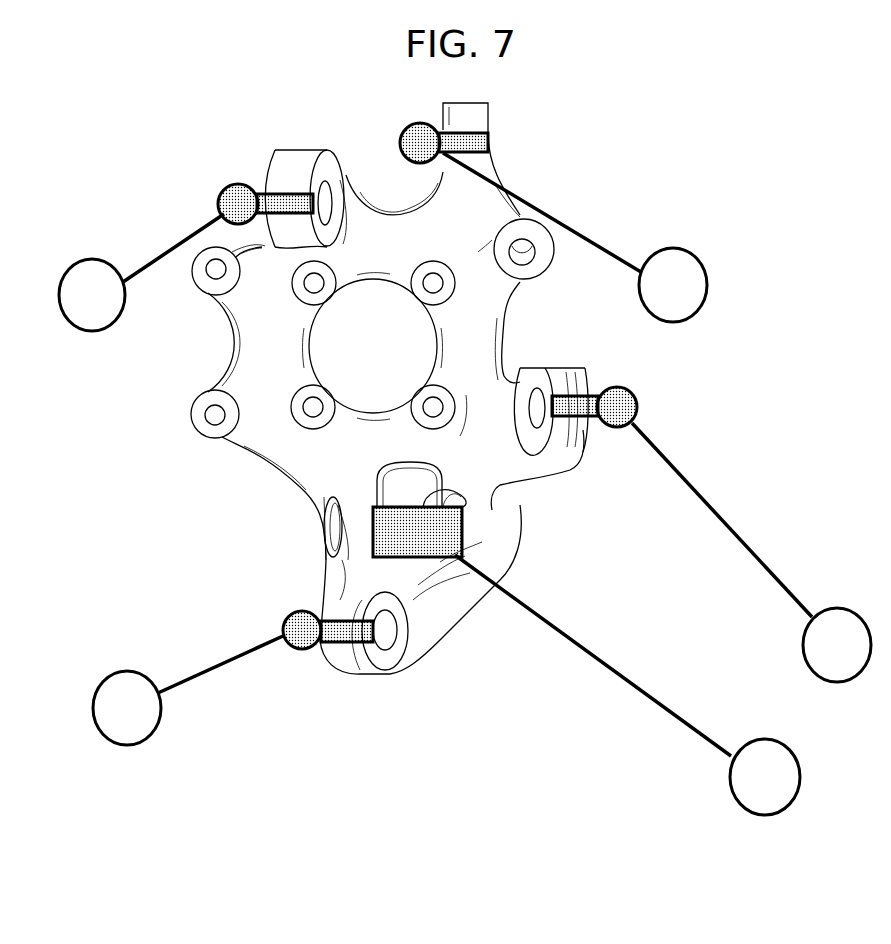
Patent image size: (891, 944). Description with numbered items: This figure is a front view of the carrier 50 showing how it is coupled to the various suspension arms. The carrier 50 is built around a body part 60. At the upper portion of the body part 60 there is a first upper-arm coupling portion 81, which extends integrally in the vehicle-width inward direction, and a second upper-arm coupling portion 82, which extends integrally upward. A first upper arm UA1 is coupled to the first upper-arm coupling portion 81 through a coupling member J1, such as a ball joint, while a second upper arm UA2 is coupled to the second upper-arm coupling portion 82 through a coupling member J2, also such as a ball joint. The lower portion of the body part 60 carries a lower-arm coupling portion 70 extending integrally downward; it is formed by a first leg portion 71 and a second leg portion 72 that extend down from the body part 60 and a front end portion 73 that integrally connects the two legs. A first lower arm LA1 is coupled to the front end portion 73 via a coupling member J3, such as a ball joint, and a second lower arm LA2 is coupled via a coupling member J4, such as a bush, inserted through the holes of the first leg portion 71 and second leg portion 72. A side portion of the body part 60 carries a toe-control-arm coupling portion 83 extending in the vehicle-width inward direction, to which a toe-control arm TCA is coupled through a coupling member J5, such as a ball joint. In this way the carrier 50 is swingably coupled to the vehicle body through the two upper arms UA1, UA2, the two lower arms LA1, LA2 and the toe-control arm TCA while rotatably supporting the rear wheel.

The carrier 50 is at (158, 144).
The body part 60 is at (490, 328).
The lower-arm coupling portion 70 is at (450, 628).
The first leg portion 71 is at (335, 560).
The second leg portion 72 is at (476, 531).
The front end portion 73 is at (380, 670).
The first upper-arm coupling portion 81 is at (310, 186).
The second upper-arm coupling portion 82 is at (486, 164).
The toe-control-arm coupling portion 83 is at (570, 465).
The coupling member J1 is at (290, 195).
The coupling member J2 is at (480, 133).
The coupling member J3 is at (335, 652).
The coupling member J4 is at (450, 492).
The coupling member J5 is at (572, 367).
The first upper arm UA1 is at (165, 253).
The second upper arm UA2 is at (604, 250).
The first lower arm LA1 is at (224, 662).
The second lower arm LA2 is at (638, 686).
The toe-control arm TCA is at (711, 504).